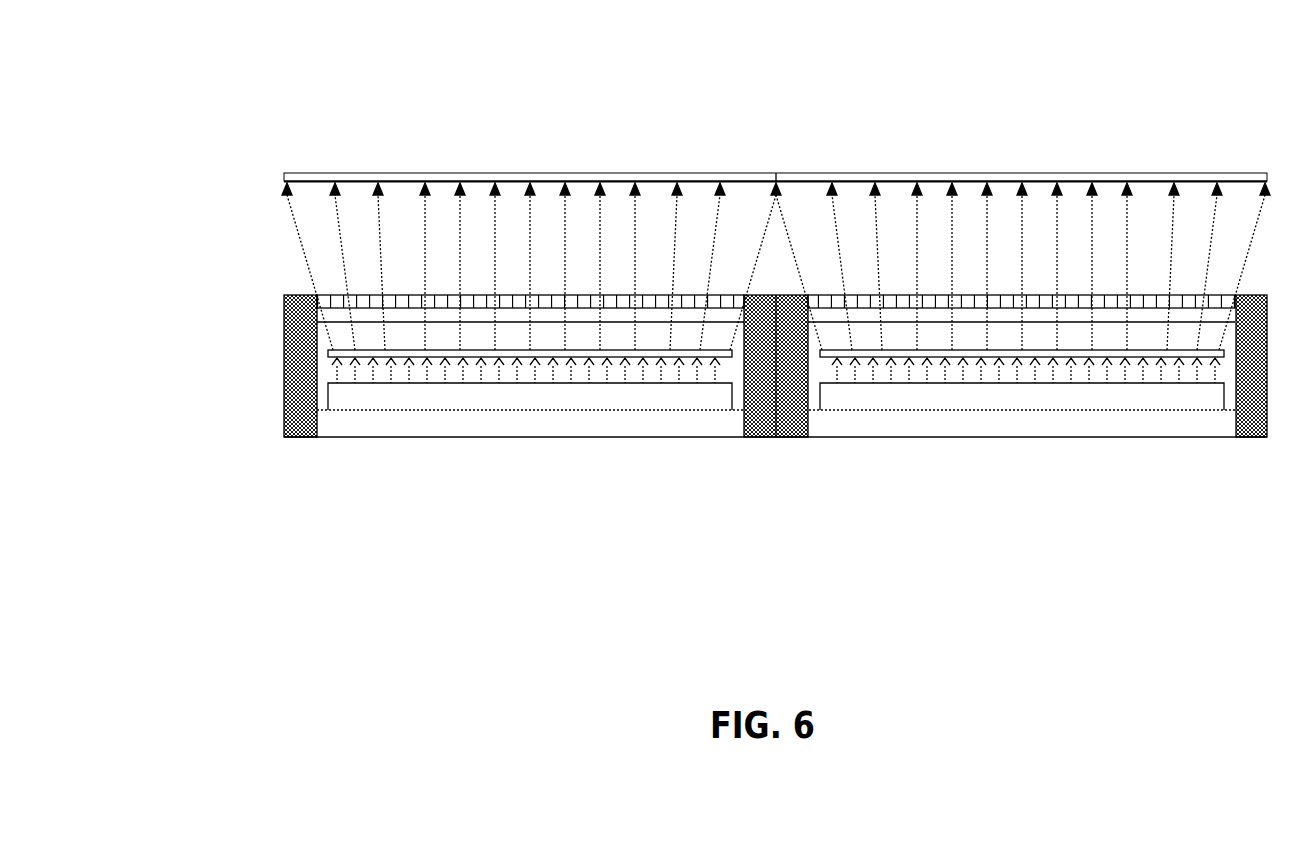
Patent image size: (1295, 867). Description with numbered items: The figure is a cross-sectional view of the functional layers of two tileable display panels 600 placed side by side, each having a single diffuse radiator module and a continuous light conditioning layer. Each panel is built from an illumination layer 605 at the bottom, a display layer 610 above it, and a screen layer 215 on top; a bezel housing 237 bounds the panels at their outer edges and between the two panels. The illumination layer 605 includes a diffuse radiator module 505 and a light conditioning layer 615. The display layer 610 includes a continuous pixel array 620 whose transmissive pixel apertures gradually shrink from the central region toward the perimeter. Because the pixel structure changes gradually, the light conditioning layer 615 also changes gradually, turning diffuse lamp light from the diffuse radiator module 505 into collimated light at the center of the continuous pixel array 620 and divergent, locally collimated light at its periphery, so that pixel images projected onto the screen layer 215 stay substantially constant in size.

The tileable display panel 600 is at (695, 276).
The screen layer 215 is at (272, 168).
The bezel housing 237 is at (302, 295).
The display layer 610 is at (716, 278).
The continuous pixel array 620 is at (488, 288).
The illumination layer 605 is at (670, 418).
The light conditioning layer 615 is at (513, 352).
The diffuse radiator module 505 is at (776, 396).